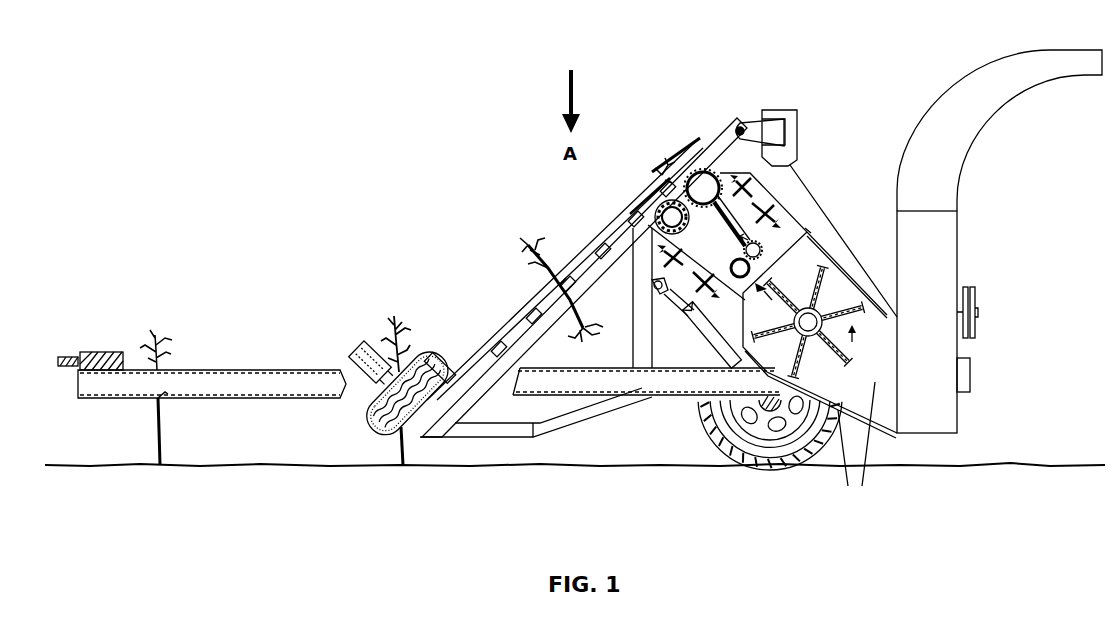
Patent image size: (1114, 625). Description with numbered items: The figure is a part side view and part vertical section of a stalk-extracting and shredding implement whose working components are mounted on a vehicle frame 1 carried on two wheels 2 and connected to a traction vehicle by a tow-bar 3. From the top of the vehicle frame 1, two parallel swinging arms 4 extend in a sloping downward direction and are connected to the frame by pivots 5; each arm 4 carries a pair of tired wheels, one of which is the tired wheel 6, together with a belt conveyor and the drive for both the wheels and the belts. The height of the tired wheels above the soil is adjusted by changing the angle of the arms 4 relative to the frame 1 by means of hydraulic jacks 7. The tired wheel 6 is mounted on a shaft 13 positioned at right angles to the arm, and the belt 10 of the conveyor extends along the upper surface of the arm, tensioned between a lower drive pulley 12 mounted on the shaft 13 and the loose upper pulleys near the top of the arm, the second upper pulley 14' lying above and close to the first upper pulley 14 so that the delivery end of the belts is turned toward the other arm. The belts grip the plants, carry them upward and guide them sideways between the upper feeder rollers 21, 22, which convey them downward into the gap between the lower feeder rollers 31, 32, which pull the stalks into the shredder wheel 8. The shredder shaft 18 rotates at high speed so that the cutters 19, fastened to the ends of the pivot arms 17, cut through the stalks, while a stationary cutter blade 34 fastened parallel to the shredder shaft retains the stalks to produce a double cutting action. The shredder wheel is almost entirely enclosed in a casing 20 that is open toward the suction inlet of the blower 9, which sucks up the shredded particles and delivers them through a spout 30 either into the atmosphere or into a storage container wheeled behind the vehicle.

The vehicle frame 1 is at (750, 390).
The wheels 2 is at (795, 455).
The tow-bar 3 is at (262, 380).
The swinging arms 4 is at (592, 270).
The pivots 5 is at (740, 126).
The tired wheel 6 is at (375, 418).
The hydraulic jacks 7 is at (700, 326).
The shredder wheel 8 is at (842, 293).
The blower 9 is at (940, 264).
The belt 10 is at (478, 360).
The lower drive pulleys 12 is at (419, 468).
The shafts 13 is at (386, 396).
The first upper pulley 14 is at (643, 173).
The second upper pulley 14' is at (676, 144).
The pivot arms 17 is at (775, 336).
The shredder shaft 18 is at (812, 336).
The cutters 19 is at (830, 268).
The casing 20 is at (856, 444).
The upper feeder roller 21 is at (703, 182).
The upper feeder roller 22 is at (648, 210).
The spout 30 is at (983, 88).
The lower feeder roller 31 is at (758, 246).
The lower feeder roller 32 is at (737, 275).
The stationary cutter blade 34 is at (760, 292).